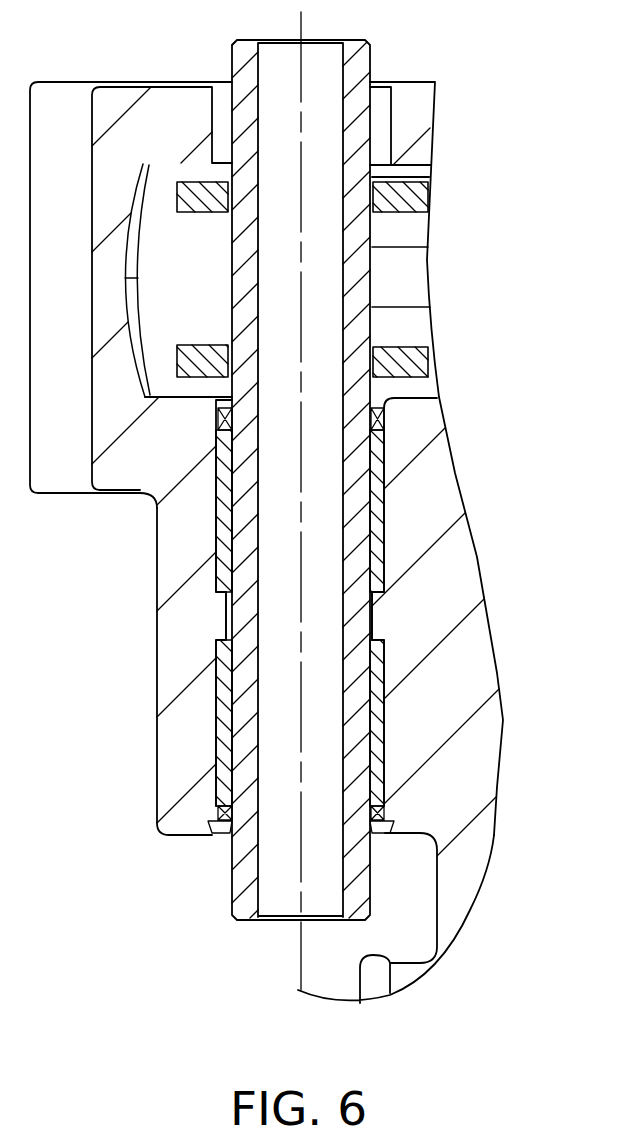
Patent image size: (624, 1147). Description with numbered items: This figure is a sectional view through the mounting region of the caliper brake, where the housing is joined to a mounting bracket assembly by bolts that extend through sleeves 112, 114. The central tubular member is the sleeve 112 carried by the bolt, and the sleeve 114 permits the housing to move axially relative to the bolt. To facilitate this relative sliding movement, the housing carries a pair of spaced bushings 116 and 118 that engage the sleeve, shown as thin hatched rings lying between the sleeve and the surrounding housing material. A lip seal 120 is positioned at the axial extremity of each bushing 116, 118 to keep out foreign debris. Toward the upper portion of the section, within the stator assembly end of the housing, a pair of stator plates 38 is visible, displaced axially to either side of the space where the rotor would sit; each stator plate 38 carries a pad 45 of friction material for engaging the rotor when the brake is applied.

The sleeve 112 is at (360, 70).
The stator plate 38 is at (420, 196).
The pad 45 is at (408, 228).
The bushing 116 is at (378, 496).
The sleeve 114 is at (370, 618).
The bushing 118 is at (383, 722).
The lip seal 120 is at (382, 807).